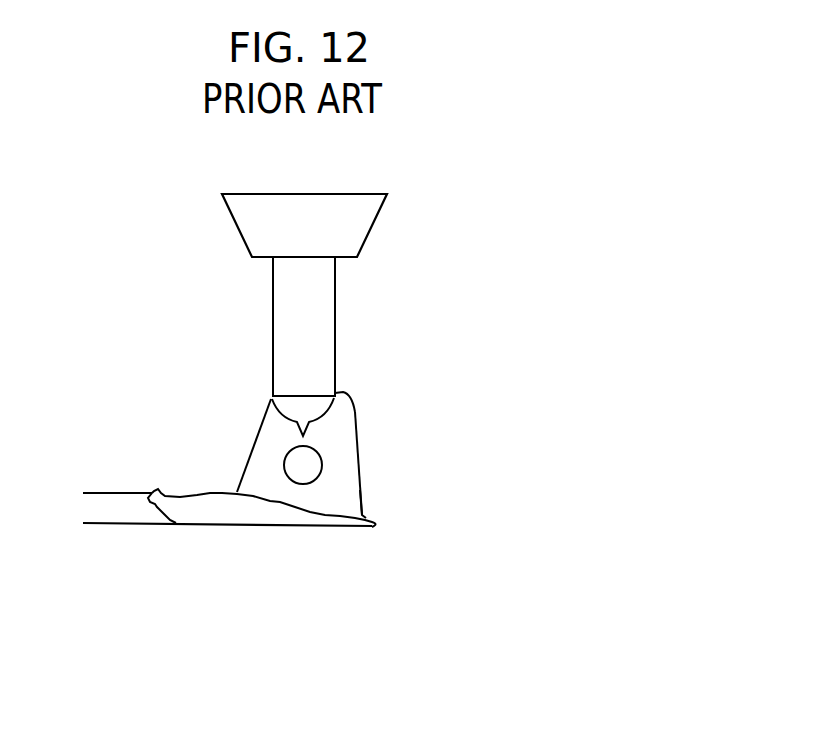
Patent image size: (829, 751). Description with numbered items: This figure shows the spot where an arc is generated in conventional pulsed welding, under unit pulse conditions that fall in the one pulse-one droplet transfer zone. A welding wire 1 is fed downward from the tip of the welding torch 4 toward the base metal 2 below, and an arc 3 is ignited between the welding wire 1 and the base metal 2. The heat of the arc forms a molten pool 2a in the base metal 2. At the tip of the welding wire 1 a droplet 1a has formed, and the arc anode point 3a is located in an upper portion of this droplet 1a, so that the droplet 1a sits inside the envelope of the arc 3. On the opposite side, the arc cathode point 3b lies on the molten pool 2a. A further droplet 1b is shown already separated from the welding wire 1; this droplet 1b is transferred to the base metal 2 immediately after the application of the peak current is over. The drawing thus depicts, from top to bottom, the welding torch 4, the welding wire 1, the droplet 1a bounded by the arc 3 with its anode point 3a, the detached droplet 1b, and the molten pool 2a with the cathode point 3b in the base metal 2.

The welding torch 4 is at (372, 230).
The welding wire 1 is at (335, 326).
The droplet 1a is at (305, 410).
The droplet 1b is at (288, 462).
The arc 3 is at (355, 433).
The arc anode point 3a is at (335, 387).
The arc cathode point 3b is at (367, 512).
The base metal 2 is at (113, 523).
The molten pool 2a is at (292, 515).